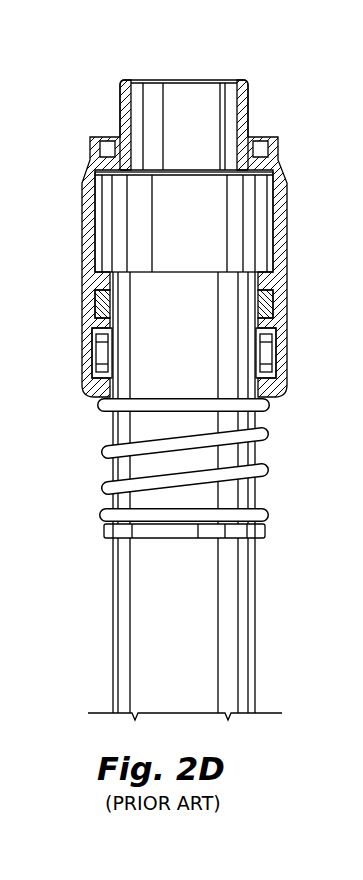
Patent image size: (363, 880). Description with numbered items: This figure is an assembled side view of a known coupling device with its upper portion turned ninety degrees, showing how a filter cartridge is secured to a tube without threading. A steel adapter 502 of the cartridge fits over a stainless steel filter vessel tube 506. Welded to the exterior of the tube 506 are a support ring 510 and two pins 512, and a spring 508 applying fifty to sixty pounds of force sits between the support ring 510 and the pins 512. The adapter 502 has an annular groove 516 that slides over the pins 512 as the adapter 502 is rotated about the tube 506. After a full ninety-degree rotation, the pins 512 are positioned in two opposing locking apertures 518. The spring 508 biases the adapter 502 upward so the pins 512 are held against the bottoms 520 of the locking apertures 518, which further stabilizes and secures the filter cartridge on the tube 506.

The steel adapter 502 is at (203, 90).
The filter vessel tube 506 is at (256, 634).
The spring 508 is at (268, 444).
The support ring 510 is at (102, 530).
The pins 512 is at (104, 350).
The annular groove 516 is at (264, 324).
The locking apertures 518 is at (92, 338).
The bottoms of the locking apertures 520 is at (284, 392).